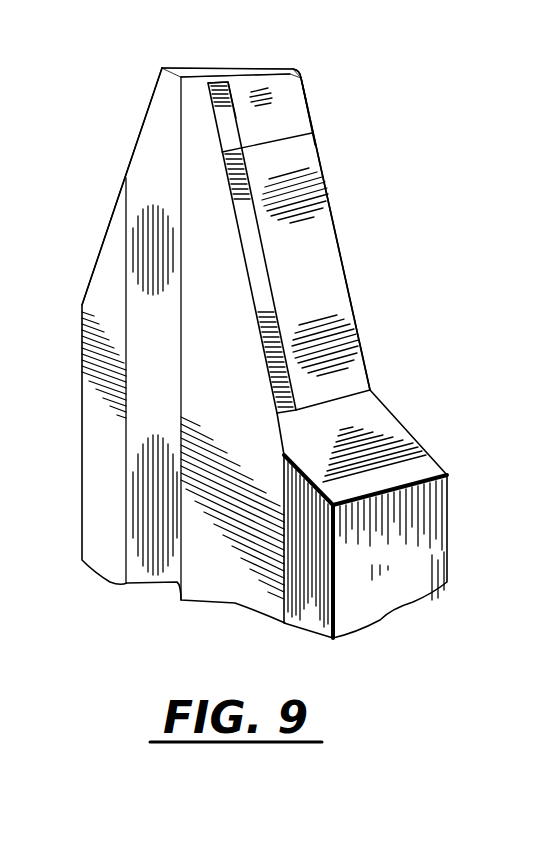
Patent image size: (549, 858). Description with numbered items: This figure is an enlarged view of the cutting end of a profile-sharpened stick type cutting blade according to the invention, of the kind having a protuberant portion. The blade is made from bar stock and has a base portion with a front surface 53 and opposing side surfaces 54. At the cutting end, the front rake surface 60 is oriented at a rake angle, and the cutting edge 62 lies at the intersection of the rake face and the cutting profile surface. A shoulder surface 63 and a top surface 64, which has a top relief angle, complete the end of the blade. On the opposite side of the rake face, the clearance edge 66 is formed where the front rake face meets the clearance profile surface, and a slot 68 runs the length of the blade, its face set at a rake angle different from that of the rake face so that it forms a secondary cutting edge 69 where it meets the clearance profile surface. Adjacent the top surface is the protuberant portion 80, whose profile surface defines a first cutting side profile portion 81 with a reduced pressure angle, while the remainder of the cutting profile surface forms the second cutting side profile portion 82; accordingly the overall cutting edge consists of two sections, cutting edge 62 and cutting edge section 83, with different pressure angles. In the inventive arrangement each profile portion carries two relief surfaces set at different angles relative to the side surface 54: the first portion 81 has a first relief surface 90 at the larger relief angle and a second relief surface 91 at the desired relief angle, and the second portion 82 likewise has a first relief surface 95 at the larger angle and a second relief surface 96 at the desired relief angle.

The front surface 53 is at (307, 598).
The side surface 54 is at (406, 558).
The front rake surface 60 is at (118, 470).
The cutting edge 62 is at (255, 313).
The shoulder surface 63 is at (378, 432).
The top surface 64 is at (242, 72).
The clearance edge 66 is at (100, 252).
The slot 68 is at (153, 383).
The secondary cutting edge 69 is at (147, 121).
The protuberant portion 80 is at (305, 87).
The first cutting side profile portion 81 is at (318, 107).
The second cutting side profile portion 82 is at (331, 222).
The cutting edge section 83 is at (214, 114).
The first relief surface 90 is at (279, 117).
The second relief surface 91 is at (226, 131).
The first relief surface 95 is at (319, 276).
The second relief surface 96 is at (243, 213).